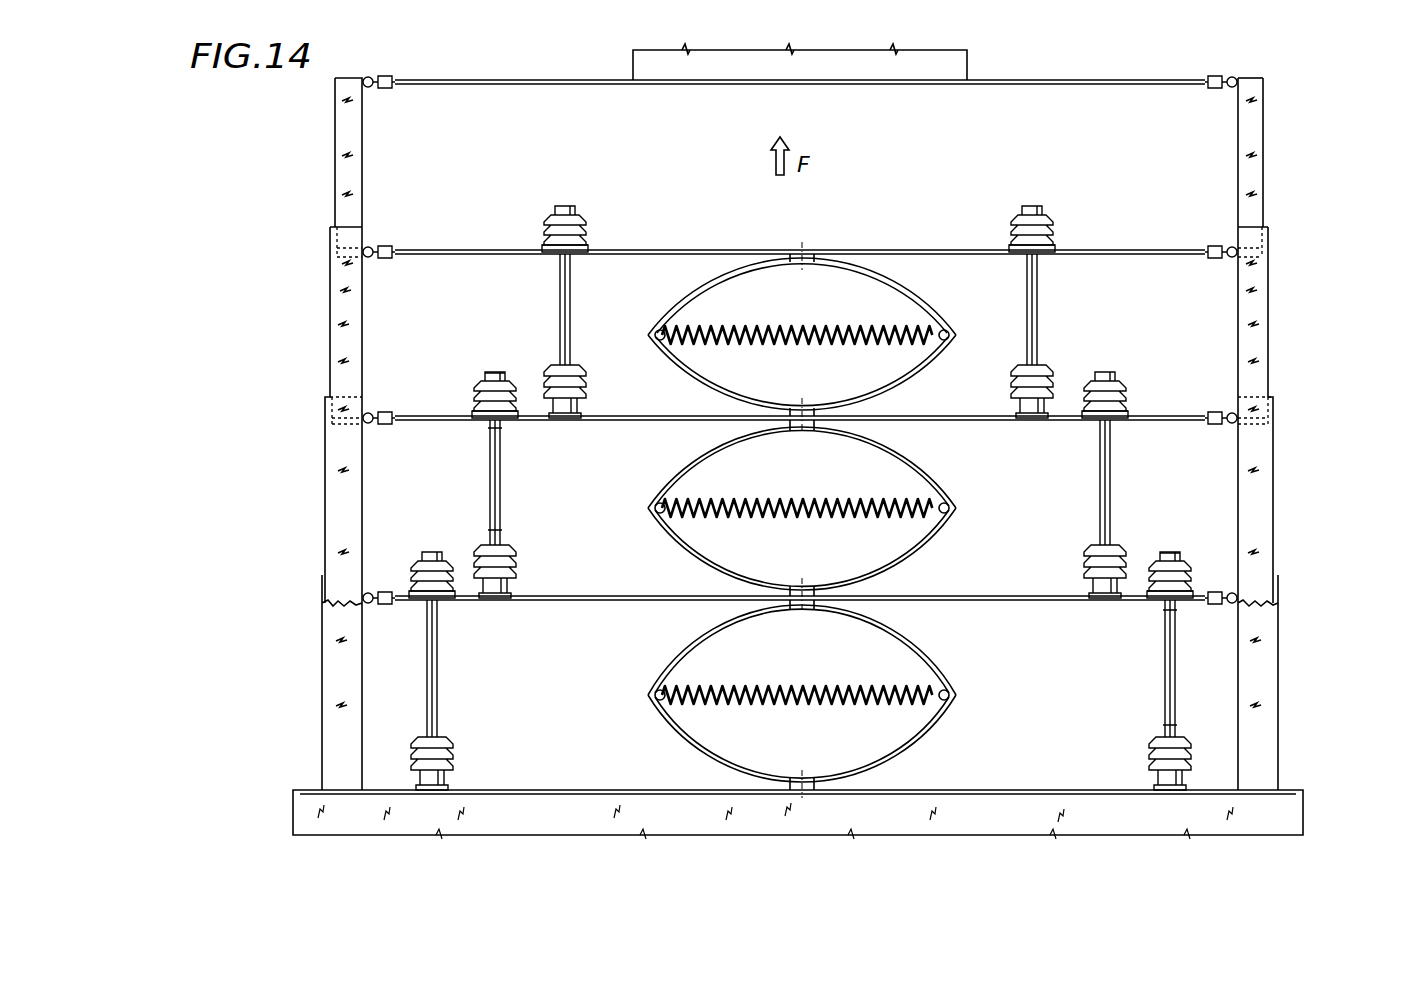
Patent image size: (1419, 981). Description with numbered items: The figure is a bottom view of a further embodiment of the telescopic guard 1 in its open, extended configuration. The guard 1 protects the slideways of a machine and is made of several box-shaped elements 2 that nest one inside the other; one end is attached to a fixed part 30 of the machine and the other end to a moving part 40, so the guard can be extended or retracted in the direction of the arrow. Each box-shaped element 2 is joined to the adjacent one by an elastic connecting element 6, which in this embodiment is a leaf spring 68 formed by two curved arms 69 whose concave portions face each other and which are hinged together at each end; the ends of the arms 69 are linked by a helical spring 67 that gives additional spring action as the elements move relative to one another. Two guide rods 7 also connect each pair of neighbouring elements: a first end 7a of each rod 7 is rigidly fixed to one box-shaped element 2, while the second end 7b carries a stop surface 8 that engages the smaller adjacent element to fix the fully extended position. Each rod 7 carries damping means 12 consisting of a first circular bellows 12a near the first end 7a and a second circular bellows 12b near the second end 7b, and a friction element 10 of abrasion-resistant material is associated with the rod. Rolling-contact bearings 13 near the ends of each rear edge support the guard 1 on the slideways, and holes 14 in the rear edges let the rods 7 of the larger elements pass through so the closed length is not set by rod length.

The telescopic guard 1 is at (1290, 100).
The box-shaped element 2 is at (330, 152).
The elastic element 6 is at (747, 448).
The guide rod 7 is at (486, 480).
The first end of the rod 7a is at (490, 540).
The second end of the rod 7b is at (490, 425).
The stop surface 8 is at (487, 373).
The friction element 10 is at (1135, 406).
The damping means 12 is at (823, 491).
The first circular bellows 12a is at (1052, 370).
The second circular bellows 12b is at (1058, 216).
The rolling-contact bearing 13 is at (1236, 252).
The hole 14 is at (490, 250).
The fixed part of the machine 30 is at (330, 812).
The moving part of the machine 40 is at (957, 68).
The helical spring 67 is at (758, 320).
The leaf spring 68 is at (645, 303).
The curved arm 69 is at (893, 275).